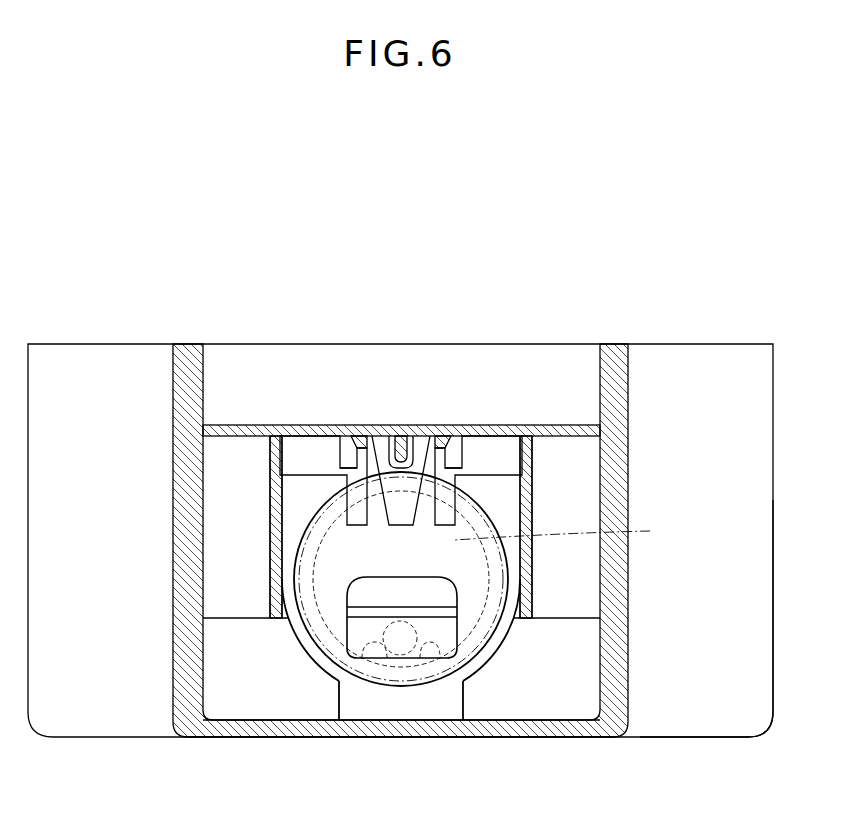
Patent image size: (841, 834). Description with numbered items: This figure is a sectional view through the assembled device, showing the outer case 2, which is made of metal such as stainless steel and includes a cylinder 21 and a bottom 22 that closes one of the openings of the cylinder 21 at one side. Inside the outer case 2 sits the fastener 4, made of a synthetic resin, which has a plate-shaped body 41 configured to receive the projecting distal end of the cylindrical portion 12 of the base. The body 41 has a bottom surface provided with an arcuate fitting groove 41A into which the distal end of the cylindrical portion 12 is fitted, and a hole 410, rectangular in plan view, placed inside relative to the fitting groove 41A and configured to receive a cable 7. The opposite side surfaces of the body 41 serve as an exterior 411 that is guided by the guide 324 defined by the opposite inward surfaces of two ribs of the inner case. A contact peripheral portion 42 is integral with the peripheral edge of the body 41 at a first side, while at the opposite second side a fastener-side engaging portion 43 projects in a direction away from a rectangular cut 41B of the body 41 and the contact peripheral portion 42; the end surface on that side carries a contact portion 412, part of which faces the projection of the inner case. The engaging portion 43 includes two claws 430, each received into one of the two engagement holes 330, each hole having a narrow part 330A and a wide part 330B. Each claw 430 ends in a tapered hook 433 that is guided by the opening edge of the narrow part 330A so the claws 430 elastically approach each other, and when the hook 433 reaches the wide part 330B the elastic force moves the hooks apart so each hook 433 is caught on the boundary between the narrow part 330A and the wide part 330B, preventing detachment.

The outer case 2 is at (709, 256).
The cylinder 21 is at (688, 687).
The bottom 22 is at (375, 738).
The fastener 4 is at (278, 660).
The guide 324 is at (280, 522).
The engagement hole 330 is at (317, 263).
The narrow part 330A is at (398, 440).
The wide part 330B is at (358, 440).
The body 41 is at (520, 580).
The exterior 411 is at (271, 487).
The contact portion 412 is at (323, 470).
The claw 430 is at (377, 448).
The fastener-side engaging portion 43 is at (418, 440).
The hook 433 is at (470, 446).
The fitting groove 41A is at (497, 620).
The rectangular cut 41B is at (441, 504).
The contact peripheral portion 42 is at (452, 699).
The hole 410 is at (437, 655).
The cable 7 is at (356, 655).
The cylindrical portion 12 is at (565, 530).